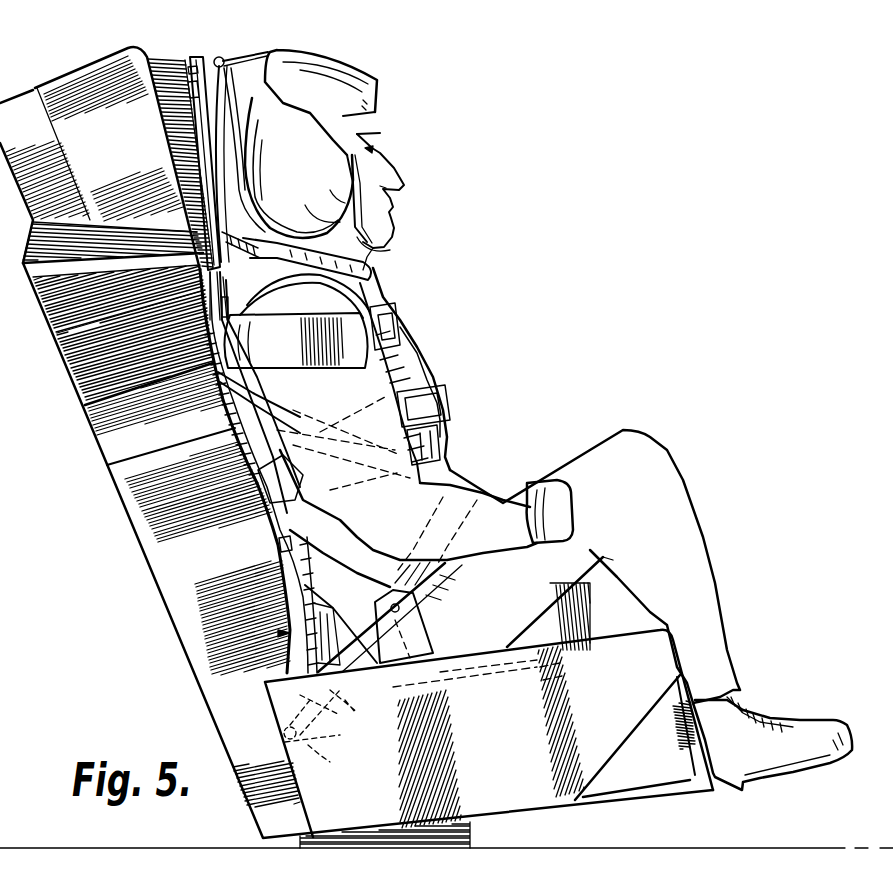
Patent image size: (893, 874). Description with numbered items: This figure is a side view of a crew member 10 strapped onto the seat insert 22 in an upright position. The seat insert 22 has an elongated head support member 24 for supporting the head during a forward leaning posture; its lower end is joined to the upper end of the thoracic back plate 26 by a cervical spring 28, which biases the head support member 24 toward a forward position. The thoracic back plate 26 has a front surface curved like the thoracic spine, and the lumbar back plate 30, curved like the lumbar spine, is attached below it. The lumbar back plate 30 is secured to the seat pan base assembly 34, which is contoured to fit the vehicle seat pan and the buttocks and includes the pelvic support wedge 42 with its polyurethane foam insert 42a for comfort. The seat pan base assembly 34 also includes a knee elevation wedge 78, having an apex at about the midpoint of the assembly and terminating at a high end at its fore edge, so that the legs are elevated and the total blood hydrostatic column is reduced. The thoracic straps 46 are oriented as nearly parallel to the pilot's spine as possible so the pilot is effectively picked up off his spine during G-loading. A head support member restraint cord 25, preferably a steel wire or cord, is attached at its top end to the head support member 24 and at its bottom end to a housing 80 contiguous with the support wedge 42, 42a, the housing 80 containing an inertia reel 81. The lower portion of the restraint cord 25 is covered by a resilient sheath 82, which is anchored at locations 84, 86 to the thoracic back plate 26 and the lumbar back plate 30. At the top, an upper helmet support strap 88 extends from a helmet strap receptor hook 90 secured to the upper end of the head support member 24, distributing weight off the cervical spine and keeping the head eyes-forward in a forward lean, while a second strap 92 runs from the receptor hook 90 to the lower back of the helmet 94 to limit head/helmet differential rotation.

The seat occupant 10 is at (590, 455).
The seat insert 22 is at (282, 633).
The head support member 24 is at (197, 57).
The head support member restraint cord 25 is at (290, 565).
The thoracic back plate 26 is at (203, 457).
The cervical spring 28 is at (205, 290).
The lumbar back plate 30 is at (313, 583).
The seat pan base assembly 34 is at (470, 690).
The pelvic support wedge 42 is at (257, 673).
The foam insert of support wedge 42a is at (370, 673).
The thoracic straps 46 is at (440, 365).
The knee elevation wedge 78 is at (577, 620).
The housing 80 is at (346, 730).
The inertia reel 81 is at (330, 762).
The sheath 82 is at (213, 322).
The anchor location 84 is at (223, 420).
The anchor location 86 is at (283, 543).
The upper helmet support strap 88 is at (248, 67).
The helmet strap receptor hook 90 is at (218, 57).
The second strap 92 is at (243, 130).
The helmet 94 is at (343, 60).